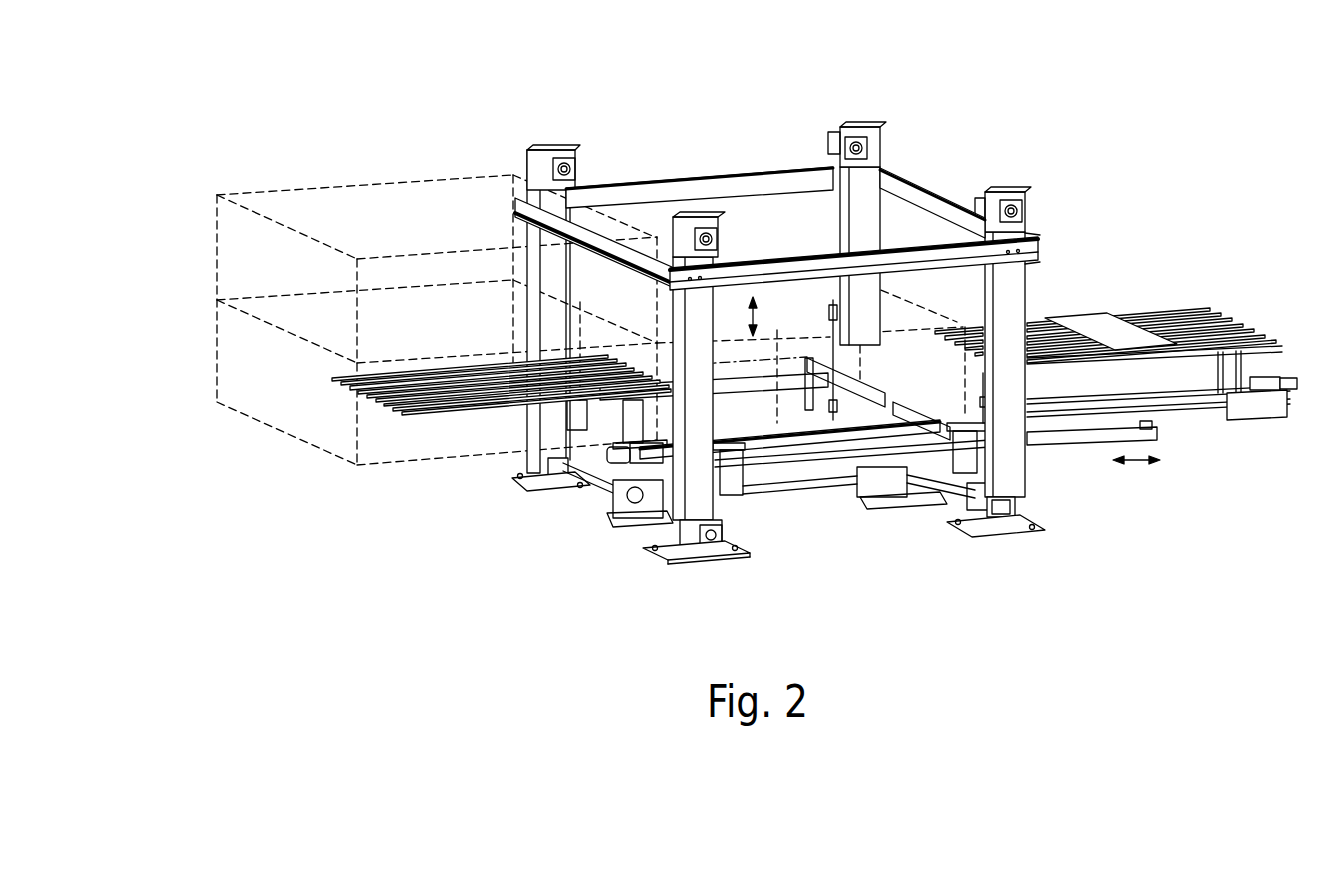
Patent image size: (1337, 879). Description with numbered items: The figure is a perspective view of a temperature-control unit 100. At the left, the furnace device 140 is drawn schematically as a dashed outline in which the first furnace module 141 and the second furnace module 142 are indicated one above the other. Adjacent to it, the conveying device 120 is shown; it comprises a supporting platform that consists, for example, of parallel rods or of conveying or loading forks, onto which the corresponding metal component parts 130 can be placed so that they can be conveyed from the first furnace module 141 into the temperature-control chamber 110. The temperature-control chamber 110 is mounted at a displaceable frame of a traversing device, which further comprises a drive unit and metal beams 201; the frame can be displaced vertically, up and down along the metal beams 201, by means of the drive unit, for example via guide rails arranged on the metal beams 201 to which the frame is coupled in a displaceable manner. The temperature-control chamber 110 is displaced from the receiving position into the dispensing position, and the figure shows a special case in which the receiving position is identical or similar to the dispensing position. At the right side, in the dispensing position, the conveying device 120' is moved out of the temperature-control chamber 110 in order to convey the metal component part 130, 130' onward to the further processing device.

The temperature-control unit 100 is at (692, 95).
The temperature-control chamber 110 is at (802, 415).
The conveying device 120 is at (502, 441).
The conveying device 120' is at (1167, 440).
The metal component part 130 is at (1108, 313).
The metal component part 130' is at (1108, 302).
The furnace device 140 is at (344, 142).
The first furnace module 141 is at (281, 361).
The second furnace module 142 is at (290, 287).
The metal beams 201 is at (546, 150).